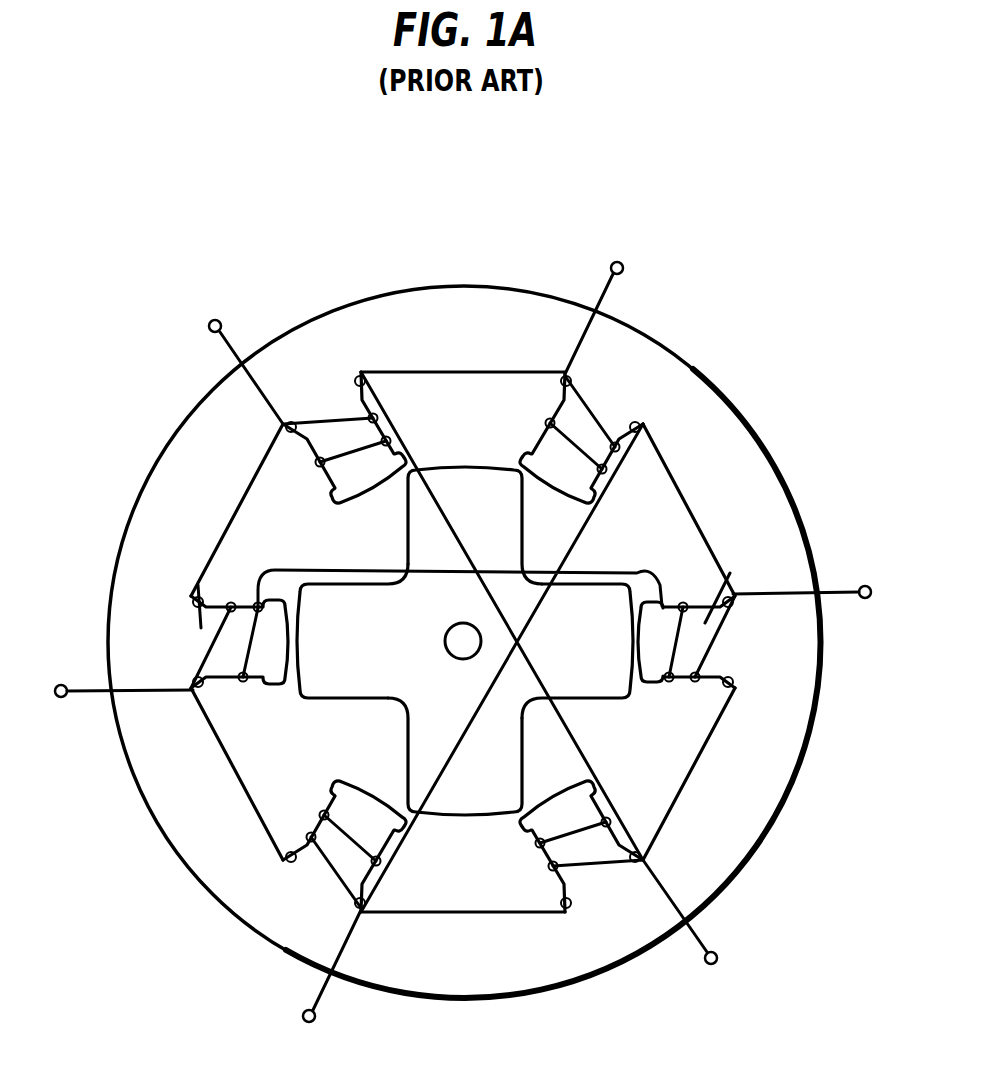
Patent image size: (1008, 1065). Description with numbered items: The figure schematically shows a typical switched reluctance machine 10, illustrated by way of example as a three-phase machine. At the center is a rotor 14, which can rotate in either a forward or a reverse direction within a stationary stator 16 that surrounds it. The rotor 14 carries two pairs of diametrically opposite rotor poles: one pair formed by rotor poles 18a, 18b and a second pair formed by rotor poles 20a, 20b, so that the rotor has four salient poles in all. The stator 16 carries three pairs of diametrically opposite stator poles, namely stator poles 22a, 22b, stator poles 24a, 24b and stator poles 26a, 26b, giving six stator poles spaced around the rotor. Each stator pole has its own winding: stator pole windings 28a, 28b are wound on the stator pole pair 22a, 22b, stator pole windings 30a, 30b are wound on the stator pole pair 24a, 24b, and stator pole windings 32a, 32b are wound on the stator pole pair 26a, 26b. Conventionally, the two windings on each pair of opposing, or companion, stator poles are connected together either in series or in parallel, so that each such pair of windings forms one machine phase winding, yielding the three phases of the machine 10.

The switched reluctance machine 10 is at (768, 326).
The rotor 14 is at (603, 690).
The stator 16 is at (167, 484).
The rotor pole 18a is at (322, 685).
The rotor pole 18b is at (622, 588).
The rotor pole 20a is at (456, 486).
The rotor pole 20b is at (448, 802).
The stator pole 22a is at (199, 590).
The stator pole 22b is at (734, 592).
The stator pole 24a is at (366, 372).
The stator pole 24b is at (562, 910).
The stator pole 26a is at (645, 427).
The stator pole 26b is at (287, 860).
The stator pole winding 28a is at (196, 690).
The stator pole winding 28b is at (713, 647).
The stator pole winding 30a is at (318, 425).
The stator pole winding 30b is at (616, 860).
The stator pole winding 32a is at (548, 425).
The stator pole winding 32b is at (376, 860).